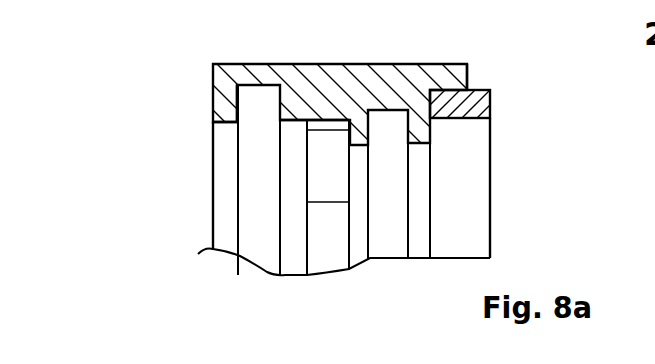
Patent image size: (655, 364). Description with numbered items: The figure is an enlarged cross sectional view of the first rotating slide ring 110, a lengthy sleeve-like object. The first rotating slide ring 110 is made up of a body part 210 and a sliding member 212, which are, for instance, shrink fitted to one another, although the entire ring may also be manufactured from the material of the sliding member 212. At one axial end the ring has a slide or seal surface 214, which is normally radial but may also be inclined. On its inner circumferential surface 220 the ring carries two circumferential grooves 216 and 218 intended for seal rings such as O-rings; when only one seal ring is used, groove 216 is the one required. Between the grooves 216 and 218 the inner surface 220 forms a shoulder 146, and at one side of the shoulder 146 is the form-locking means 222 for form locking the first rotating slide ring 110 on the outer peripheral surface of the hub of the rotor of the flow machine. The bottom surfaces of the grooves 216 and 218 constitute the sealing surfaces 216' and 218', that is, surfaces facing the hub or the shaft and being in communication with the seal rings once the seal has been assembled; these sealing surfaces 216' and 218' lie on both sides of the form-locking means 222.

The first rotating slide ring 110 is at (188, 107).
The body part 210 is at (330, 93).
The sliding member 212 is at (465, 90).
The slide or seal surface 214 is at (490, 108).
The circumferential groove 216 is at (159, 180).
The sealing surface 216' is at (142, 115).
The circumferential groove 218 is at (488, 184).
The sealing surface 218' is at (532, 179).
The inner circumferential surface 220 is at (297, 122).
The form-locking means 222 is at (327, 173).
The shoulder 146 is at (307, 218).